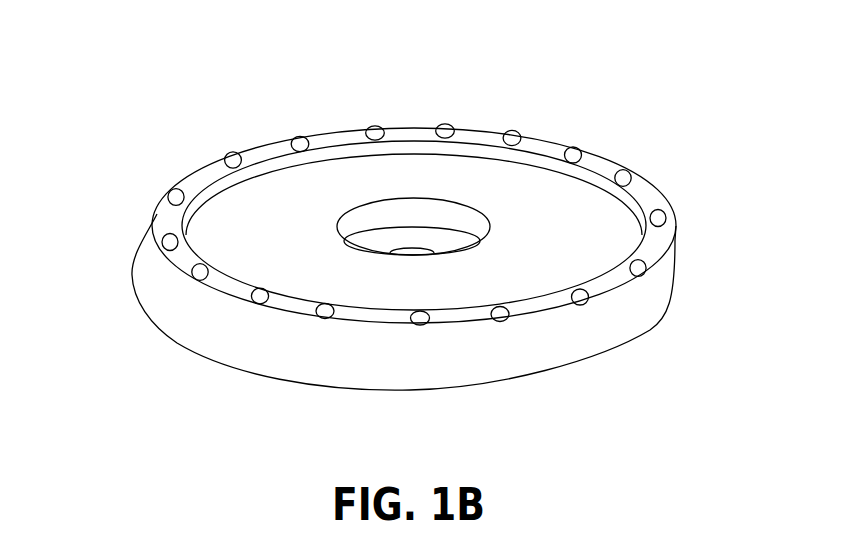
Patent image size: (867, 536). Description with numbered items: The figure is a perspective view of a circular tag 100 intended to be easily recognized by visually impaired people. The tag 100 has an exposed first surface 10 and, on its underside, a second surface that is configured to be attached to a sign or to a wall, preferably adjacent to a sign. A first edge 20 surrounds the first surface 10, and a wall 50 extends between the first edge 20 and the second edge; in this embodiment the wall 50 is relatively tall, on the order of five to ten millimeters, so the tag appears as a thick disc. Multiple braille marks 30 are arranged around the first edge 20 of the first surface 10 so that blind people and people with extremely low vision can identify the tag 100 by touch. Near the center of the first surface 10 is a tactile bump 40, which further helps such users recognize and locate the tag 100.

The tag 100 is at (170, 121).
The first surface 10 is at (310, 197).
The first edge 20 is at (537, 148).
The braille marks 30 is at (173, 238).
The tactile bump 40 is at (400, 228).
The wall 50 is at (183, 322).